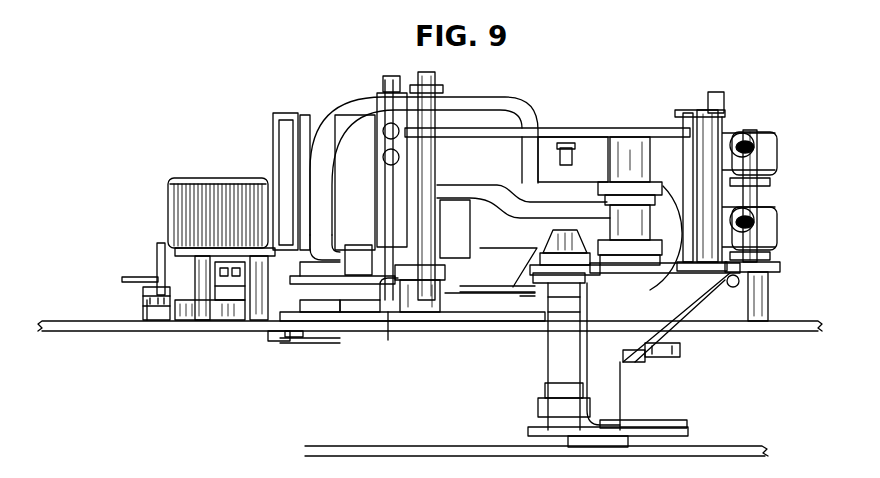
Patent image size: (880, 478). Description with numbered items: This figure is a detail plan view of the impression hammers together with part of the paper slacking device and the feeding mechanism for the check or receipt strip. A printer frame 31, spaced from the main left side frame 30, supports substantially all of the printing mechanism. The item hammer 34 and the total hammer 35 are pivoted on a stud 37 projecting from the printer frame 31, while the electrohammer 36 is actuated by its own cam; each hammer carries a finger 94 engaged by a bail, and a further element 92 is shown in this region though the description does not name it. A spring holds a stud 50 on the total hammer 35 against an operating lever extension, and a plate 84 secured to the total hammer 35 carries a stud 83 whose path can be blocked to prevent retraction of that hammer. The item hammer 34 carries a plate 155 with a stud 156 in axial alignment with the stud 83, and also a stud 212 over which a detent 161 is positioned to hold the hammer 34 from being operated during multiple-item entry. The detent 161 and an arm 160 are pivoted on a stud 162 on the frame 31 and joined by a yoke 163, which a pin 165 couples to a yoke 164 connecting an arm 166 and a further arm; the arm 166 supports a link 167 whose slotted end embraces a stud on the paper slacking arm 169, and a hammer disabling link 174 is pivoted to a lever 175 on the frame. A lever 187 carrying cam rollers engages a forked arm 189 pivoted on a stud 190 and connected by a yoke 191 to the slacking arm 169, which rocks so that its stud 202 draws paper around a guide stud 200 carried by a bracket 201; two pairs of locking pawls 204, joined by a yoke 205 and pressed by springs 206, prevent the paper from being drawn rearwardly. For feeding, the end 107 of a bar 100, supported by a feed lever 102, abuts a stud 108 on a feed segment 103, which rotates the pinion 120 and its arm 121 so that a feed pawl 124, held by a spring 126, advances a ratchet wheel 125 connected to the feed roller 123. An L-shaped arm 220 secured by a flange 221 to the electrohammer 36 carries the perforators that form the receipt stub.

The main left side frame 30 is at (397, 436).
The printer frame 31 is at (76, 325).
The item hammer 34 is at (362, 84).
The total hammer 35 is at (478, 258).
The electrohammer 36 is at (509, 188).
The stud 37 is at (625, 135).
The stud 50 is at (580, 148).
The stud 83 is at (346, 299).
The plate 84 is at (315, 299).
The linkage 92 is at (382, 268).
The finger 94 is at (680, 280).
The bar 100 is at (440, 333).
The feed lever 102 is at (660, 345).
The feed segment 103 is at (313, 344).
The end 107 is at (295, 338).
The stud 108 is at (270, 336).
The pinion 120 is at (226, 322).
The arm 121 is at (212, 322).
The feed roller 123 is at (170, 203).
The feed pawl 124 is at (176, 270).
The ratchet wheel 125 is at (158, 252).
The spring 126 is at (144, 300).
The plate 155 is at (322, 244).
The stud 156 is at (310, 248).
The arm 160 is at (457, 230).
The detent 161 is at (443, 88).
The stud 162 is at (436, 152).
The yoke 163 is at (385, 190).
The yoke 164 is at (386, 340).
The pin 165 is at (370, 292).
The arm 166 is at (445, 298).
The link 167 is at (505, 296).
The paper slacking arm 169 is at (572, 283).
The hammer disabling link 174 is at (147, 320).
The lever 175 is at (124, 284).
The lever 187 is at (630, 430).
The forked arm 189 is at (538, 410).
The stud 190 is at (546, 391).
The yoke 191 is at (605, 374).
The guide stud 200 is at (700, 271).
The bracket 201 is at (769, 290).
The stud 202 is at (684, 114).
The locking pawls 204 is at (786, 150).
The yoke 205 is at (770, 182).
The springs 206 is at (742, 135).
The stud 212 is at (384, 78).
The L-shaped arm 220 is at (300, 100).
The flange 221 is at (378, 129).